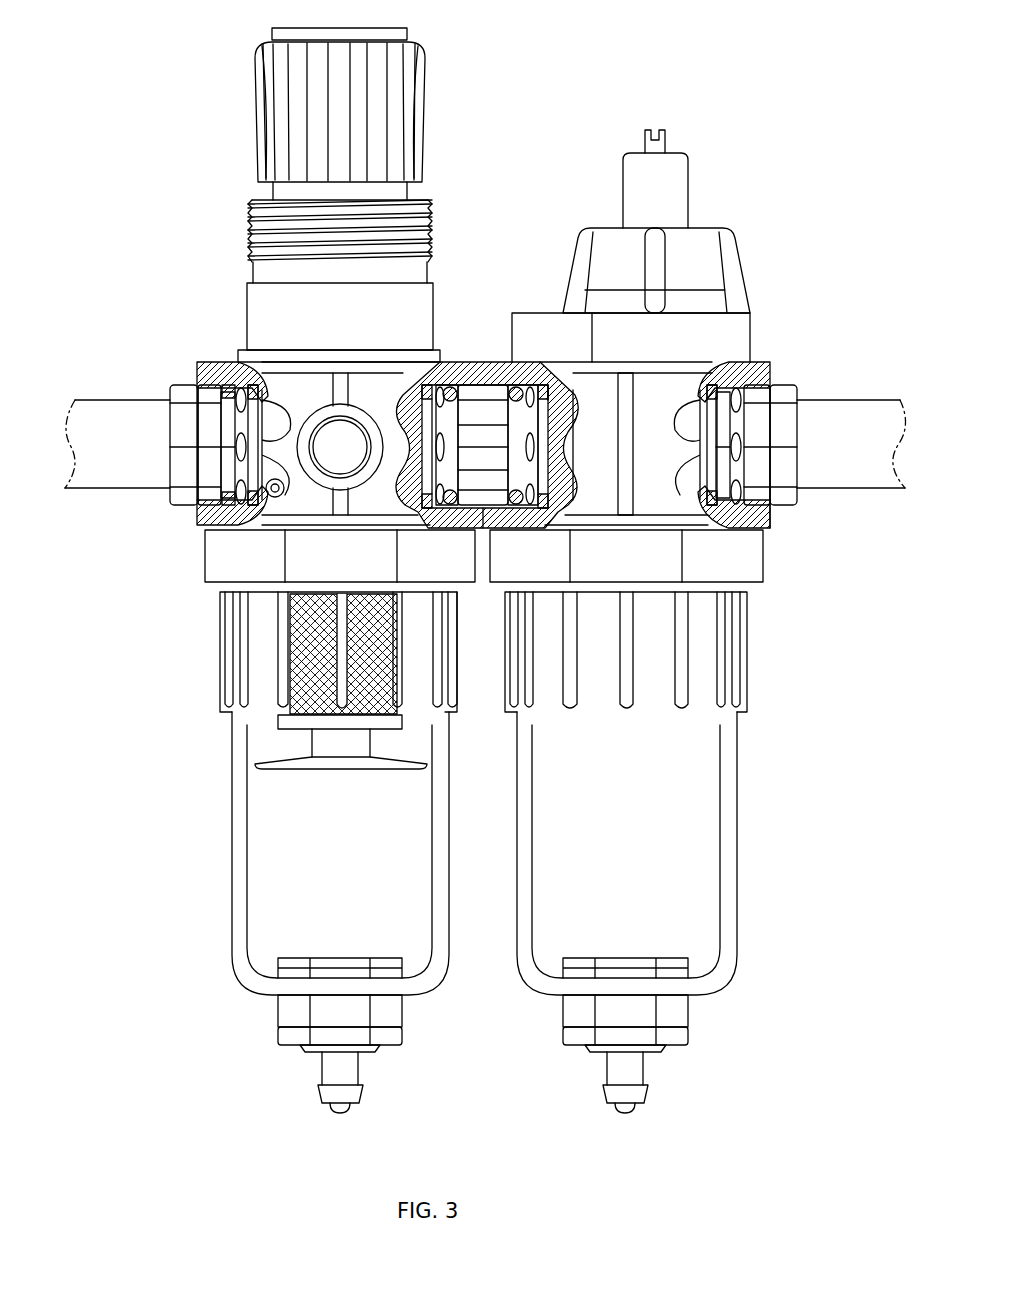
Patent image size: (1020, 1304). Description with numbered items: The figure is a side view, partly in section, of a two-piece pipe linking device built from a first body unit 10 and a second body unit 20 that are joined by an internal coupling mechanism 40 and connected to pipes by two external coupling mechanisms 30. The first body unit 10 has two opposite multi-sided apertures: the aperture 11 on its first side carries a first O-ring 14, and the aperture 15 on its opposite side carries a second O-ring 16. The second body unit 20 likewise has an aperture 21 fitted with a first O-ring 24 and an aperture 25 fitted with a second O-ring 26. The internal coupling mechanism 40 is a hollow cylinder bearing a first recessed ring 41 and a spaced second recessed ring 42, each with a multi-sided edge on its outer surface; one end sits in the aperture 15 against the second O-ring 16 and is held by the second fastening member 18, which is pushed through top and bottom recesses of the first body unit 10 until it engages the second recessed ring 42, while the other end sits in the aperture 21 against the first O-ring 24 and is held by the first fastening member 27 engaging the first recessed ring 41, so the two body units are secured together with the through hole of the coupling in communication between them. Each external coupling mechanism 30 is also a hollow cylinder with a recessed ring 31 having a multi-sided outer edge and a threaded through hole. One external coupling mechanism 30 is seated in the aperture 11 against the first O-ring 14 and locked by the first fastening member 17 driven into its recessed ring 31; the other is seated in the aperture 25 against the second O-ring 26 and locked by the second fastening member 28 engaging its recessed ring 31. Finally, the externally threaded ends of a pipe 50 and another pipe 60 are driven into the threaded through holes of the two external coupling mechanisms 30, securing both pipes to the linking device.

The first body unit 10 is at (796, 305).
The aperture 11 is at (771, 524).
The first O-ring 14 is at (716, 482).
The aperture 15 is at (492, 528).
The second O-ring 16 is at (540, 390).
The first fastening member 17 is at (737, 386).
The second fastening member 18 is at (510, 388).
The second body unit 20 is at (190, 312).
The aperture 21 is at (470, 528).
The first O-ring 24 is at (427, 392).
The aperture 25 is at (226, 494).
The second O-ring 26 is at (265, 496).
The first fastening member 27 is at (438, 386).
The second fastening member 28 is at (234, 380).
The external coupling mechanism 30 is at (206, 398).
The recessed ring 31 is at (228, 448).
The internal coupling mechanism 40 is at (477, 393).
The first recessed ring 41 is at (450, 447).
The second recessed ring 42 is at (515, 447).
The pipe 50 is at (786, 398).
The pipe 60 is at (184, 398).